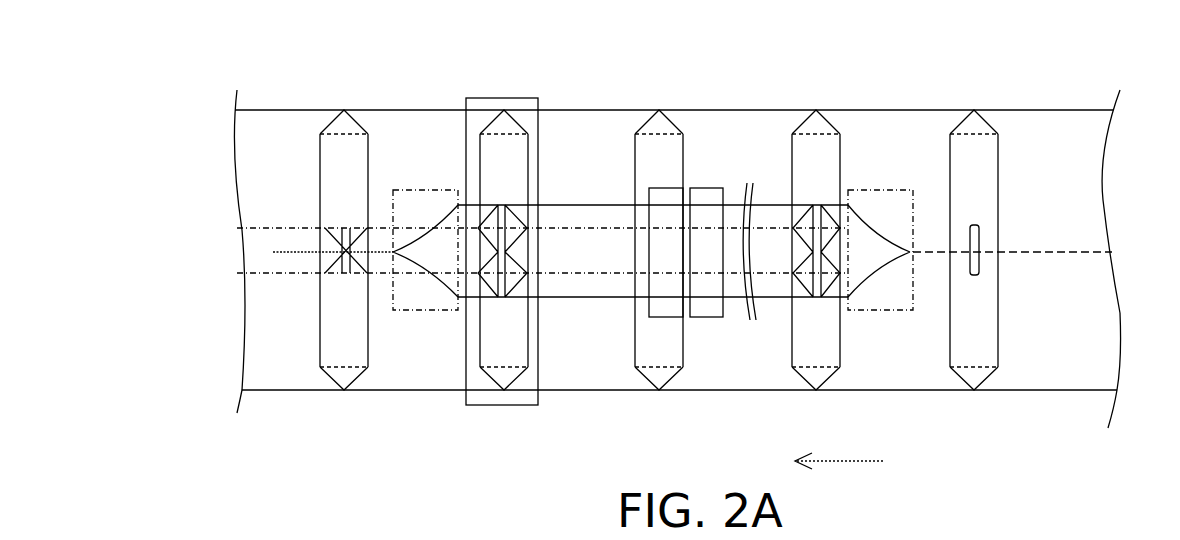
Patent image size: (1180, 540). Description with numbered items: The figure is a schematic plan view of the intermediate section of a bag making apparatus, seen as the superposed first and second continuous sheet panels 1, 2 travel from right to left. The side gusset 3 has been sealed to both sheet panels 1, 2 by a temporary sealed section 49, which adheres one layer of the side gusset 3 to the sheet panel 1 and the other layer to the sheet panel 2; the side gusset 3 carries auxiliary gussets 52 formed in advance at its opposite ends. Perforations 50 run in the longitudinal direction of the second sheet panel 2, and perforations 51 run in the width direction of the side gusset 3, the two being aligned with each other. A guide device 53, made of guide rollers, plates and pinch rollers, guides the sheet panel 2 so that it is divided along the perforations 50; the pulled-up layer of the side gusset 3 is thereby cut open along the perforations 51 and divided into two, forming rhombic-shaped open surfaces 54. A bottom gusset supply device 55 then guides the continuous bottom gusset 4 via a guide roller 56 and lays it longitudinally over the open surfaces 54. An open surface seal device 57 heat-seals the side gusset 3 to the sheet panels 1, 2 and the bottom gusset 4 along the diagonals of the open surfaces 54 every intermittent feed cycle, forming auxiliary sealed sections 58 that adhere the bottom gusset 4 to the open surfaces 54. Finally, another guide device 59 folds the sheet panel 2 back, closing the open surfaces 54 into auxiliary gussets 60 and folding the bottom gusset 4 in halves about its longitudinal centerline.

The first continuous sheet panel 1 is at (1085, 378).
The second continuous sheet panel 2 is at (1083, 120).
The side gusset 3 is at (1003, 227).
The bottom gusset 4 is at (731, 203).
The temporary sealed section 49 is at (982, 252).
The perforations 50 is at (1050, 245).
The perforations 51 is at (985, 272).
The auxiliary gussets 52 is at (972, 112).
The guide device 53 is at (880, 190).
The open surfaces 54 is at (813, 205).
The bottom gusset supply device 55 is at (702, 177).
The guide roller 56 is at (662, 315).
The open surface seal device 57 is at (522, 98).
The auxiliary sealed sections 58 is at (542, 205).
The guide device 59 is at (423, 190).
The auxiliary gussets 60 is at (330, 238).